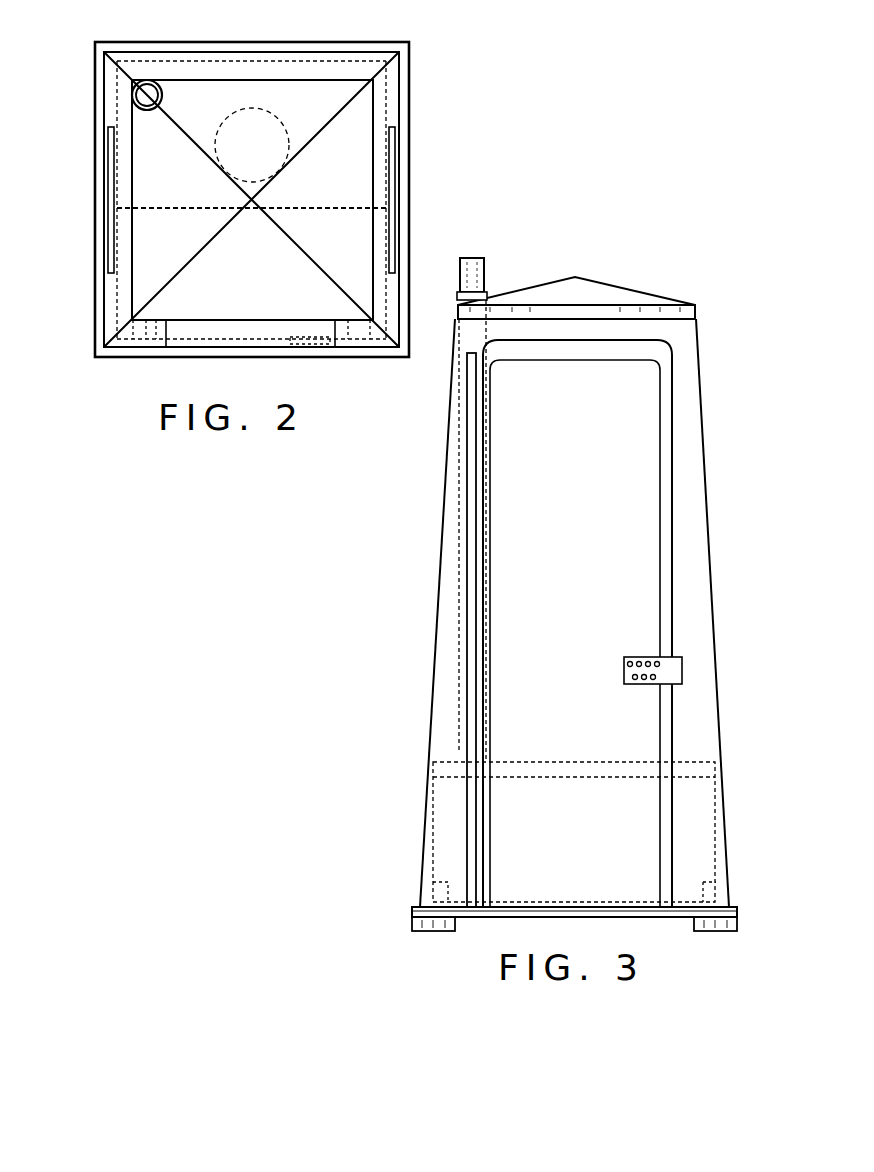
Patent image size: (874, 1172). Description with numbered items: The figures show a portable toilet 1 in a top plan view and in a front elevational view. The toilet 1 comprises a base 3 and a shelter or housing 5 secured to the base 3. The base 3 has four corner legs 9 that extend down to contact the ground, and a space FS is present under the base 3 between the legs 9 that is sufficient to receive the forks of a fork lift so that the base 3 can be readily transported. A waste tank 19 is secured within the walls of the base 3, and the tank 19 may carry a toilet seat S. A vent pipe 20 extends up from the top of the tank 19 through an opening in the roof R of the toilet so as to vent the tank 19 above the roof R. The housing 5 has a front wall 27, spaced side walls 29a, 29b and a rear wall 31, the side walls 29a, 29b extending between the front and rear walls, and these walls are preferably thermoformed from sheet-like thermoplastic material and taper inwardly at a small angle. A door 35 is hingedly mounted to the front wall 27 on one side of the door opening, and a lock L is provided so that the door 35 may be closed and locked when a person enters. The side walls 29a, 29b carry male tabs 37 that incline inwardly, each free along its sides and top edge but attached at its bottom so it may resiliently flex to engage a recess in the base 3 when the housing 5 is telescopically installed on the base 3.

In FIG. 2, the portable toilet 1 is at (74, 86).
In FIG. 3, the portable toilet 1 is at (708, 322).
In FIG. 2, the housing 5 is at (350, 76).
In FIG. 3, the housing 5 is at (730, 708).
In FIG. 2, the rear wall 31 is at (212, 73).
In FIG. 2, the side wall 29a is at (381, 89).
In FIG. 2, the side wall 29b is at (104, 297).
In FIG. 2, the roof R is at (353, 142).
In FIG. 3, the roof R is at (612, 280).
In FIG. 2, the vent pipe 20 is at (160, 90).
In FIG. 3, the vent pipe 20 is at (486, 270).
In FIG. 2, the toilet seat S is at (253, 108).
In FIG. 2, the male tab 37 is at (108, 192).
In FIG. 2, the waste tank 19 is at (302, 210).
In FIG. 2, the front wall 27 is at (157, 338).
In FIG. 3, the front wall 27 is at (450, 714).
In FIG. 2, the door 35 is at (257, 337).
In FIG. 3, the door 35 is at (606, 415).
In FIG. 2, the lock L is at (315, 346).
In FIG. 3, the lock L is at (664, 657).
In FIG. 3, the corner leg 9 is at (412, 922).
In FIG. 3, the space FS is at (568, 920).
In FIG. 3, the base 3 is at (704, 946).